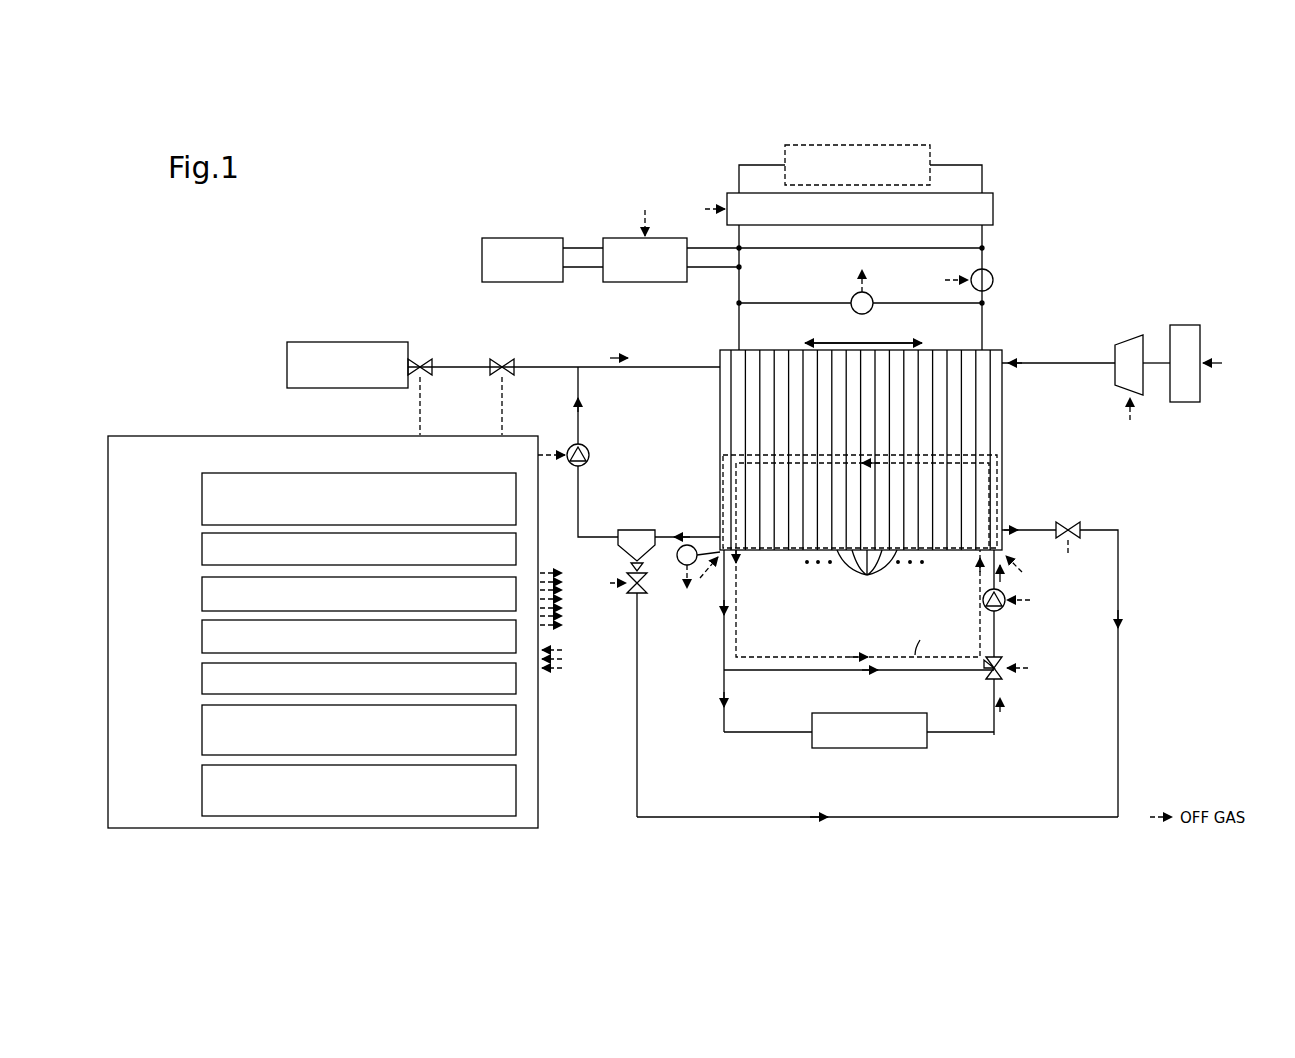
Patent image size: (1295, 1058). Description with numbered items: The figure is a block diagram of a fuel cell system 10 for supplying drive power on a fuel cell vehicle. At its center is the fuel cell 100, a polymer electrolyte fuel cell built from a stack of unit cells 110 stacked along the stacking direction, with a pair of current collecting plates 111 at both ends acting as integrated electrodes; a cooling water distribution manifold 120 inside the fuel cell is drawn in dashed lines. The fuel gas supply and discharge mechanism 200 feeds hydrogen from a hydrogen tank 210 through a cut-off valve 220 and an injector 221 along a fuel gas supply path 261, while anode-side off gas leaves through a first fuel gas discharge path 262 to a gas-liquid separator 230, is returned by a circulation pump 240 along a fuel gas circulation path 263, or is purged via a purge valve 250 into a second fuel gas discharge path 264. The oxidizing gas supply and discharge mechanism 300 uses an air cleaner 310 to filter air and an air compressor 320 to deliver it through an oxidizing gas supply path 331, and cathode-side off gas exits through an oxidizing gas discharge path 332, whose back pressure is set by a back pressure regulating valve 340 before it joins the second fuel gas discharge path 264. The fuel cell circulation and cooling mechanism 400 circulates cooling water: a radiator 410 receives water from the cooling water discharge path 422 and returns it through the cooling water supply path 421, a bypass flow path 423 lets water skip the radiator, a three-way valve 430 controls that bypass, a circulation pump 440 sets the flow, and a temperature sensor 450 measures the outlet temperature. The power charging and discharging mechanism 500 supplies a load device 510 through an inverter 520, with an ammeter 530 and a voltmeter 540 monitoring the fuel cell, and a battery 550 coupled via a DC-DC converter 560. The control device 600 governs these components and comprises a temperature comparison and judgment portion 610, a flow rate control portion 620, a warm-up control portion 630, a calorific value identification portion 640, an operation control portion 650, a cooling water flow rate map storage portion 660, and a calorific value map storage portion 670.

The fuel cell system 10 is at (362, 210).
The fuel cell 100 is at (1018, 462).
The unit cell 110 is at (865, 574).
The current collecting plate 111 is at (735, 350).
The cooling water distribution manifold 120 is at (752, 446).
The fuel gas supply and discharge mechanism 200 is at (420, 335).
The hydrogen tank 210 is at (350, 342).
The cut-off valve 220 is at (430, 363).
The injector 221 is at (512, 363).
The gas-liquid separator 230 is at (637, 530).
The circulation pump 240 is at (588, 448).
The purge valve 250 is at (630, 590).
The fuel gas supply path 261 is at (645, 365).
The first fuel gas discharge path 262 is at (693, 528).
The fuel gas circulation path 263 is at (582, 490).
The second fuel gas discharge path 264 is at (636, 726).
The oxidizing gas supply and discharge mechanism 300 is at (1076, 330).
The air cleaner 310 is at (1200, 325).
The air compressor 320 is at (1120, 342).
The oxidizing gas supply path 331 is at (1040, 370).
The oxidizing gas discharge path 332 is at (1018, 527).
The back pressure regulating valve 340 is at (1070, 525).
The fuel cell circulation and cooling mechanism 400 is at (1022, 722).
The radiator 410 is at (857, 750).
The cooling water supply path 421 is at (998, 645).
The cooling water discharge path 422 is at (722, 645).
The bypass flow path 423 is at (766, 672).
The three-way valve 430 is at (1002, 678).
The circulation pump 440 is at (1005, 612).
The temperature sensor 450 is at (680, 567).
The power charging and discharging mechanism 500 is at (1070, 226).
The load device 510 is at (935, 150).
The inverter 520 is at (993, 210).
The ammeter 530 is at (994, 278).
The voltmeter 540 is at (870, 292).
The battery 550 is at (517, 282).
The DC-DC converter 560 is at (635, 282).
The control device 600 is at (160, 436).
The temperature comparison and judgment portion 610 is at (202, 490).
The flow rate control portion 620 is at (202, 549).
The warm-up control portion 630 is at (202, 594).
The calorific value identification portion 640 is at (202, 637).
The operation control portion 650 is at (202, 679).
The cooling water flow rate map storage portion 660 is at (202, 727).
The calorific value map storage portion 670 is at (202, 787).